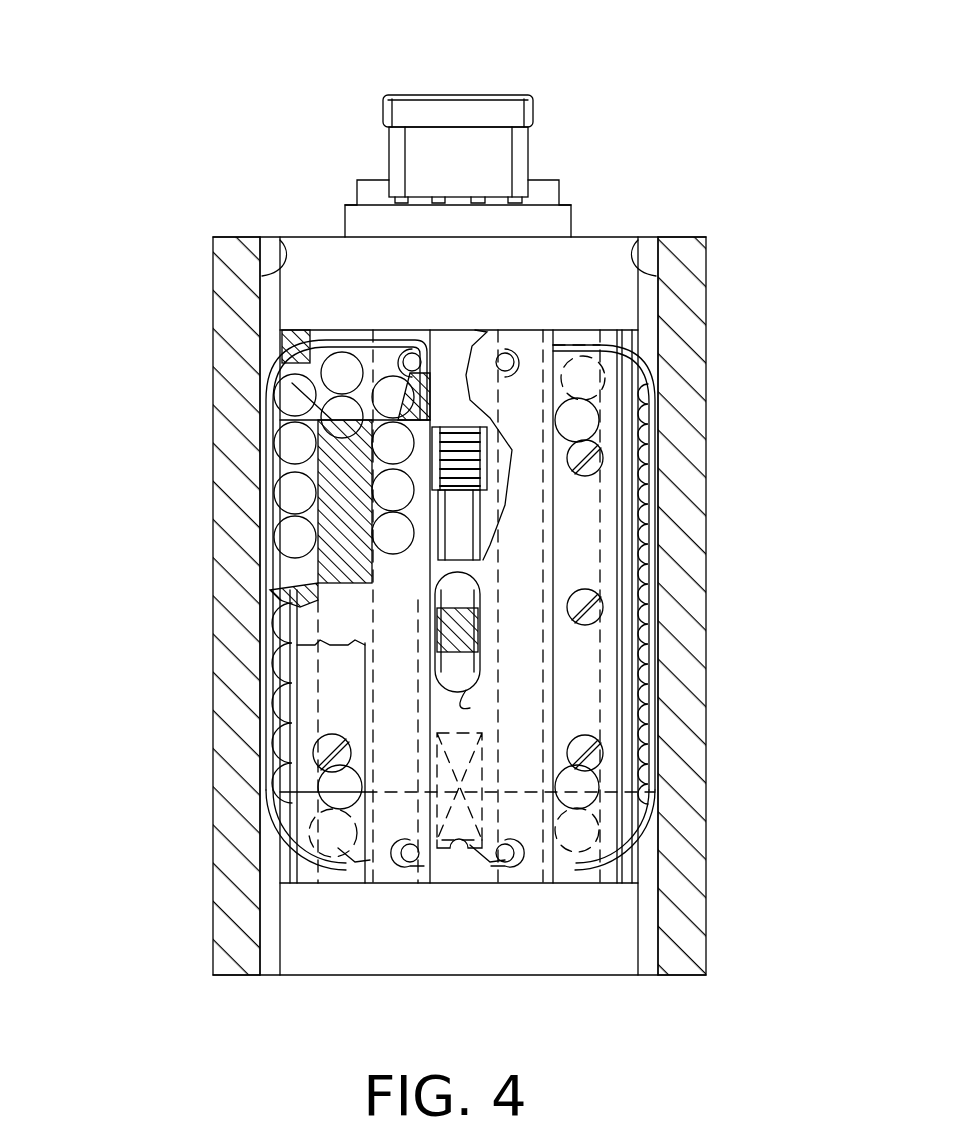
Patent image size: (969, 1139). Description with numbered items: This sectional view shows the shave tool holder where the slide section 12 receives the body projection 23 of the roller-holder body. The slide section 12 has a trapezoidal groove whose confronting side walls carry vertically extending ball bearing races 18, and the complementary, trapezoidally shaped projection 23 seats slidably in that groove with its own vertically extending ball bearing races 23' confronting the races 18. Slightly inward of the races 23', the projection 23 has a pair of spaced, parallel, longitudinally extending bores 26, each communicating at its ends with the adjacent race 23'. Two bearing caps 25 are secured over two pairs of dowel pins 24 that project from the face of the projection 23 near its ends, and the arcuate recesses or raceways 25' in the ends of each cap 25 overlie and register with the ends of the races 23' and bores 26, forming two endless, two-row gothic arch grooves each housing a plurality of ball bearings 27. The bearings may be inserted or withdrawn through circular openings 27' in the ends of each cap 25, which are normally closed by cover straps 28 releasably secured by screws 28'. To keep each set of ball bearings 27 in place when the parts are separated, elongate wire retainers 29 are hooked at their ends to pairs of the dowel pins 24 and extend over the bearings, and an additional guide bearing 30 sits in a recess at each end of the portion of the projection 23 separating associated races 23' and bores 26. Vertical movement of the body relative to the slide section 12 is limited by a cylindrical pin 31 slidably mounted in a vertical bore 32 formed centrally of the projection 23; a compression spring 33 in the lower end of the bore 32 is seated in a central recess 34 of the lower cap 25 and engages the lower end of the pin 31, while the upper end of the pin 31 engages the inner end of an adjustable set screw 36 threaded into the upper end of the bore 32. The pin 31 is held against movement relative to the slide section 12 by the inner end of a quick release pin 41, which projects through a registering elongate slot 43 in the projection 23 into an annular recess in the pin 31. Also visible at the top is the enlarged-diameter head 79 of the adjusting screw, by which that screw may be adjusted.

The slide section 12 is at (212, 322).
The ball bearing races 18 is at (281, 238).
The head 79 is at (460, 93).
The projection 23 is at (281, 502).
The ball bearing races 23' is at (464, 606).
The dowel pins 24 is at (405, 352).
The bearing caps 25 is at (450, 575).
The arcuate recesses or raceways 25' is at (458, 613).
The bores 26 is at (405, 572).
The ball bearings 27 is at (446, 580).
The circular openings 27' is at (457, 633).
The cover straps 28 is at (460, 644).
The screws 28' is at (462, 621).
The wire retainers 29 is at (280, 385).
The guide bearing 30 is at (292, 410).
The pin 31 is at (462, 538).
The vertical bore 32 is at (437, 755).
The compression spring 33 is at (602, 756).
The central recess 34 is at (467, 860).
The adjustable set screw 36 is at (445, 427).
The quick release pin 41 is at (480, 628).
The slot 43 is at (455, 707).